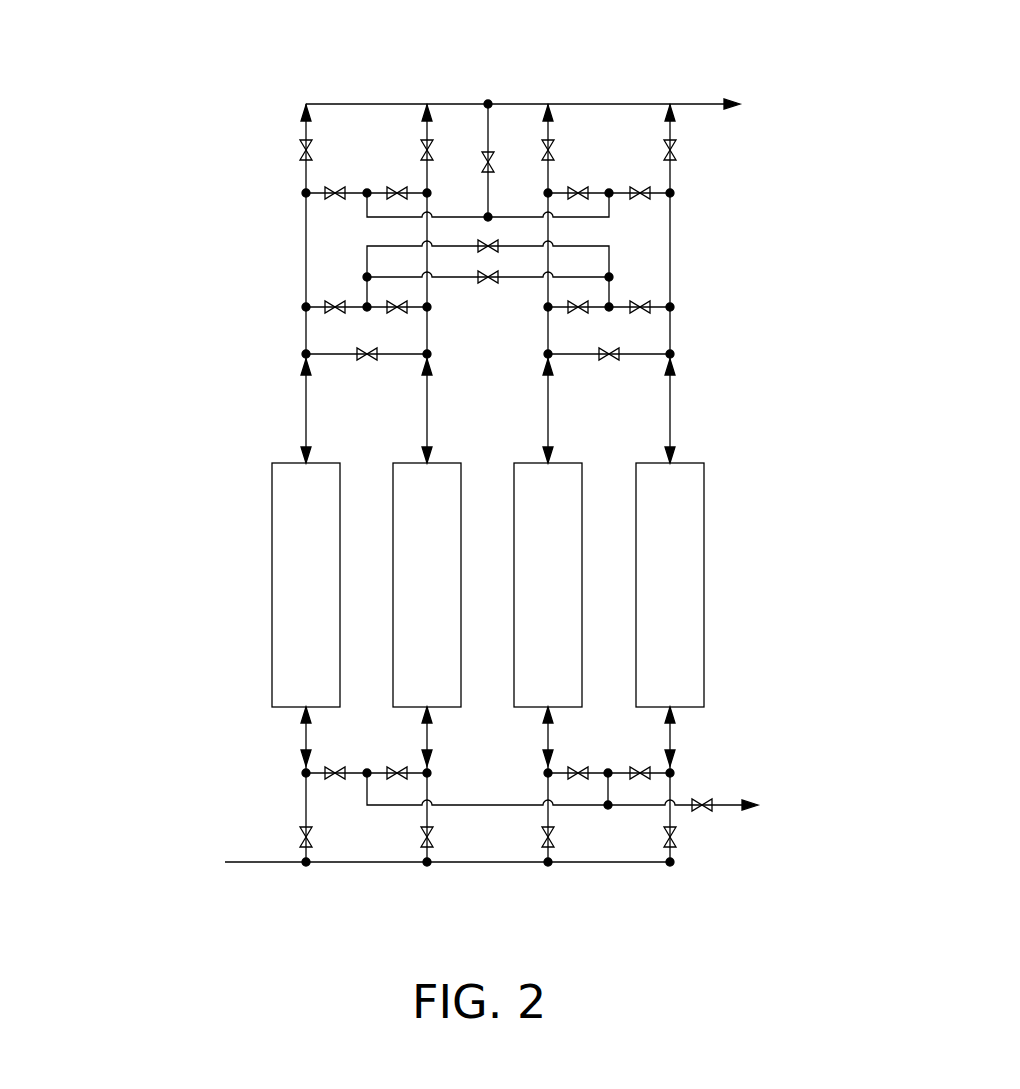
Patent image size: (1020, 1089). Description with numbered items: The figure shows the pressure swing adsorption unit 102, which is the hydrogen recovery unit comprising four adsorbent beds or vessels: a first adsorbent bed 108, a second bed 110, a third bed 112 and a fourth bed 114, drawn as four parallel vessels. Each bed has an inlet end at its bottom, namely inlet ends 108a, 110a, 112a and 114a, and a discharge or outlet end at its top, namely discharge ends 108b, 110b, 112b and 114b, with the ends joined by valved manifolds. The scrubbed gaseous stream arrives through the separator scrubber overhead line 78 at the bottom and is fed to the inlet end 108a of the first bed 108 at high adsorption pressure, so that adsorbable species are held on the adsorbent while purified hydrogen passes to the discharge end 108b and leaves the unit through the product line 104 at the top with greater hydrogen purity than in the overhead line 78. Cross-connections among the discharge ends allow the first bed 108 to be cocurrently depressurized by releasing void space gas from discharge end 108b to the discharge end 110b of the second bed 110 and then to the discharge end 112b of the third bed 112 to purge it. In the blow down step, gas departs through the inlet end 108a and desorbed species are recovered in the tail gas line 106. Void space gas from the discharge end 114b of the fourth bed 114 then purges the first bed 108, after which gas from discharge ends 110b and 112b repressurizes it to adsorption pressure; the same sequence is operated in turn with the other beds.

The separator scrubber overhead line 78 is at (240, 859).
The pressure swing adsorption (PSA) unit 102 is at (152, 452).
The product line 104 is at (695, 100).
The tail gas line 106 is at (728, 803).
The first adsorbent bed 108 is at (328, 597).
The inlet end of first adsorbent bed 108a is at (285, 712).
The discharge end of first adsorbent bed 108b is at (282, 462).
The second adsorbent bed 110 is at (449, 597).
The inlet end of second adsorbent bed 110a is at (405, 712).
The discharge end of second adsorbent bed 110b is at (453, 462).
The third adsorbent bed 112 is at (570, 597).
The inlet end of third adsorbent bed 112a is at (525, 712).
The discharge end of third adsorbent bed 112b is at (521, 462).
The fourth adsorbent bed 114 is at (692, 597).
The inlet end of fourth adsorbent bed 114a is at (647, 712).
The discharge end of fourth adsorbent bed 114b is at (686, 462).